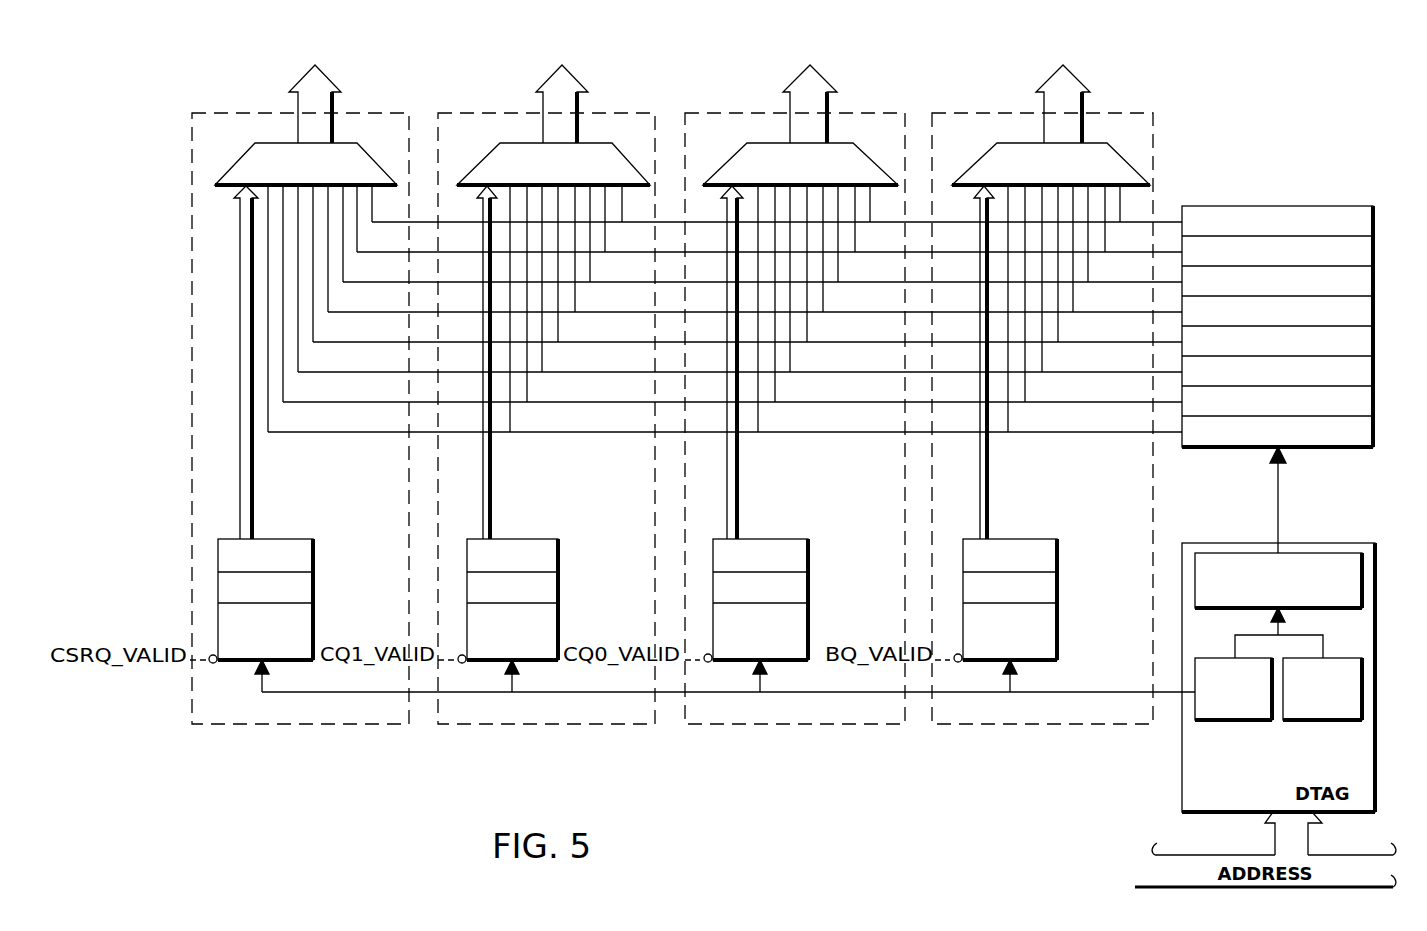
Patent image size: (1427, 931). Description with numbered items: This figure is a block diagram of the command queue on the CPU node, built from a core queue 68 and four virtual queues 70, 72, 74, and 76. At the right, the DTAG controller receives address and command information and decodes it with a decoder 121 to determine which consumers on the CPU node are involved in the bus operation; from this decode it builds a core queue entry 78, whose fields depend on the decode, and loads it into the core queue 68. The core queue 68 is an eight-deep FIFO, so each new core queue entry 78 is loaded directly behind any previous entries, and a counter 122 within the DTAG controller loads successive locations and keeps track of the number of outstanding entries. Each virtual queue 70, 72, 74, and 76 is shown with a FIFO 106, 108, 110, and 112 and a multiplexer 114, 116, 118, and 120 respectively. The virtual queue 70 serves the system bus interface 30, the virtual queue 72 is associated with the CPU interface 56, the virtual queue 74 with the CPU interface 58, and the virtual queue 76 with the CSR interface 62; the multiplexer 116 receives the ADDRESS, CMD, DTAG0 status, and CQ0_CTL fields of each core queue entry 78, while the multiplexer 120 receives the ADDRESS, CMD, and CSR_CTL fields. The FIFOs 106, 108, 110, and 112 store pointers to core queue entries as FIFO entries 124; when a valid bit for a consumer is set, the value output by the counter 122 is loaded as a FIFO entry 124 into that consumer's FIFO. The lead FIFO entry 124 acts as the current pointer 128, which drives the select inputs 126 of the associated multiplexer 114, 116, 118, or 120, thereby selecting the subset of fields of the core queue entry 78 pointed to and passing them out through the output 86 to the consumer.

The system bus interface 30 is at (1149, 51).
The CPU interface 56 is at (833, 51).
The CPU interface 58 is at (570, 51).
The CSR interface 62 is at (307, 51).
The core queue 68 is at (1298, 452).
The virtual queue 70 is at (1057, 725).
The virtual queue 72 is at (810, 725).
The virtual queue 74 is at (568, 725).
The virtual queue 76 is at (328, 725).
The core queue entry 78 is at (1376, 287).
The output arrow 86 is at (336, 100).
The FIFO 106 is at (1020, 666).
The FIFO 108 is at (770, 666).
The FIFO 110 is at (522, 666).
The FIFO 112 is at (272, 666).
The multiplexer 114 is at (1093, 138).
The multiplexer 116 is at (850, 138).
The multiplexer 118 is at (600, 138).
The multiplexer 120 is at (350, 138).
The decoder 121 is at (1305, 722).
The counter 122 is at (1218, 722).
The FIFO entry 124 is at (305, 558).
The select inputs 126 is at (270, 160).
The current pointer 128 is at (222, 548).